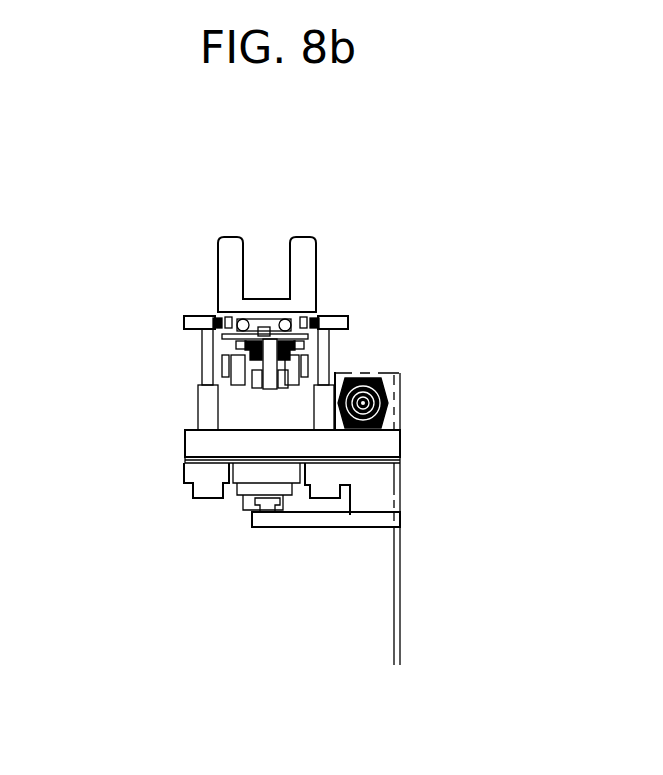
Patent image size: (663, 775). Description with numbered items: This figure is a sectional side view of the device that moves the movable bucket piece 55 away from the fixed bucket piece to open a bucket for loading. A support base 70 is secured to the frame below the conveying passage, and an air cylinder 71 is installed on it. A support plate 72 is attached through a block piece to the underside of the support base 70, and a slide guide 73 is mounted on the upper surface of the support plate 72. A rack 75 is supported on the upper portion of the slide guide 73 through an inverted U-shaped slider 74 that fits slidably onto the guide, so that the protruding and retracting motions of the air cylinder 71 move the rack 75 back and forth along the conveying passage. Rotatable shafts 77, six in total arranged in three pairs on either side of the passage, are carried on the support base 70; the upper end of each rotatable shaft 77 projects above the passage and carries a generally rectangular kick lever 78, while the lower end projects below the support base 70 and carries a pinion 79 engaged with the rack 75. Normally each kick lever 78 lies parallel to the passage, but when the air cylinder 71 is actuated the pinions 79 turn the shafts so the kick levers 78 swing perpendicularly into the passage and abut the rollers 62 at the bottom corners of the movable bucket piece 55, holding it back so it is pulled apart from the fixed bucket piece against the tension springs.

The movable bucket piece 55 is at (293, 255).
The rollers 62 is at (213, 318).
The support base 70 is at (385, 447).
The air cylinder 71 is at (390, 395).
The support plate 72 is at (372, 522).
The slide guide 73 is at (268, 505).
The inverted U-shaped slider 74 is at (292, 500).
The rack 75 is at (253, 477).
The rotatable shafts 77 is at (203, 362).
The kick lever 78 is at (195, 320).
The pinion 79 is at (210, 487).